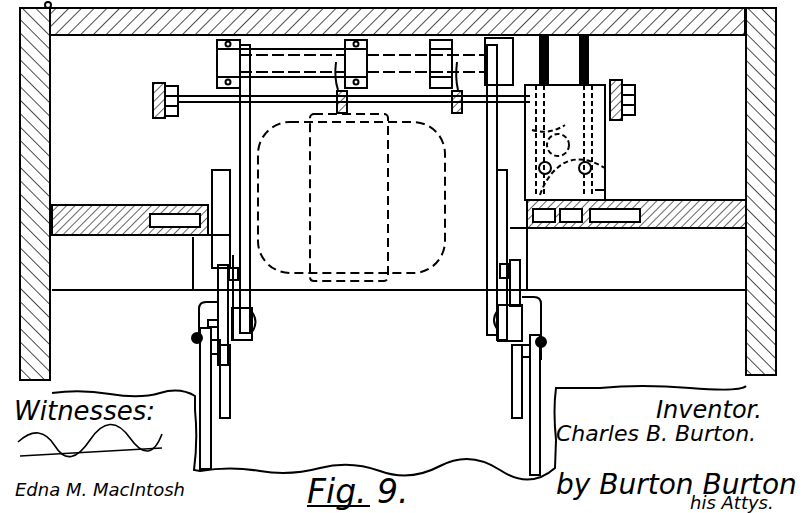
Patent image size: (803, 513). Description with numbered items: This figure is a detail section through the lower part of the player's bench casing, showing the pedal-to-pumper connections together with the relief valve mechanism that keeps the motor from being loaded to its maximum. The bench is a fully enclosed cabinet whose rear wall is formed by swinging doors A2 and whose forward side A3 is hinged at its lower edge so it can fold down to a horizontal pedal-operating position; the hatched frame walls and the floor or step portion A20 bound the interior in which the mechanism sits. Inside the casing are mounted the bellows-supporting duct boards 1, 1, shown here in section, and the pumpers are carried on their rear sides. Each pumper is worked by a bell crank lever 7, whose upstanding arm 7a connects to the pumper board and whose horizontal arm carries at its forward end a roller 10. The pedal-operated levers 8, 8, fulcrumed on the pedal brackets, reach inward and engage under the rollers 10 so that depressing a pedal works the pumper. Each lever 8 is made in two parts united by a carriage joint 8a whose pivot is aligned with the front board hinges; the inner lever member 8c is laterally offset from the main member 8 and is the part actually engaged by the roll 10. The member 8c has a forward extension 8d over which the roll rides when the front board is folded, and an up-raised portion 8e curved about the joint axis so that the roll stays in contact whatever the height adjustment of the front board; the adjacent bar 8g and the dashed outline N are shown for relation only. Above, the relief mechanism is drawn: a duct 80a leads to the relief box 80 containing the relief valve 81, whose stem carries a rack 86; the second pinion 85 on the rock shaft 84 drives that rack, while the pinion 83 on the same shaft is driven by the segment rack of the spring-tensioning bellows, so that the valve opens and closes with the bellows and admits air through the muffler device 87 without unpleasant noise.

The bellows-supporting duct board 1 is at (127, 218).
The swinging door A2 is at (77, 27).
The forward side of the bench casing A3 is at (232, 505).
The frame step A20 is at (178, 270).
The bell crank lever 7 is at (250, 193).
The upstanding arm of bell crank lever 7a is at (342, 114).
The pedal-operated lever 8 is at (211, 450).
The carriage joint 8a is at (573, 348).
The lever member 8c is at (555, 305).
The extension of lever member 8d is at (240, 280).
The up-raised portion 8e is at (226, 356).
The lever bar 8g is at (230, 412).
The roller 10 is at (242, 340).
The needle mechanism (dashed) N is at (351, 197).
The relief box 80 is at (605, 150).
The duct 80a is at (592, 168).
The relief valve 81 is at (548, 149).
The pinion 83 is at (153, 103).
The rock shaft 84 is at (210, 100).
The second pinion 85 is at (532, 134).
The rack 86 is at (611, 65).
The muffler device 87 is at (595, 188).